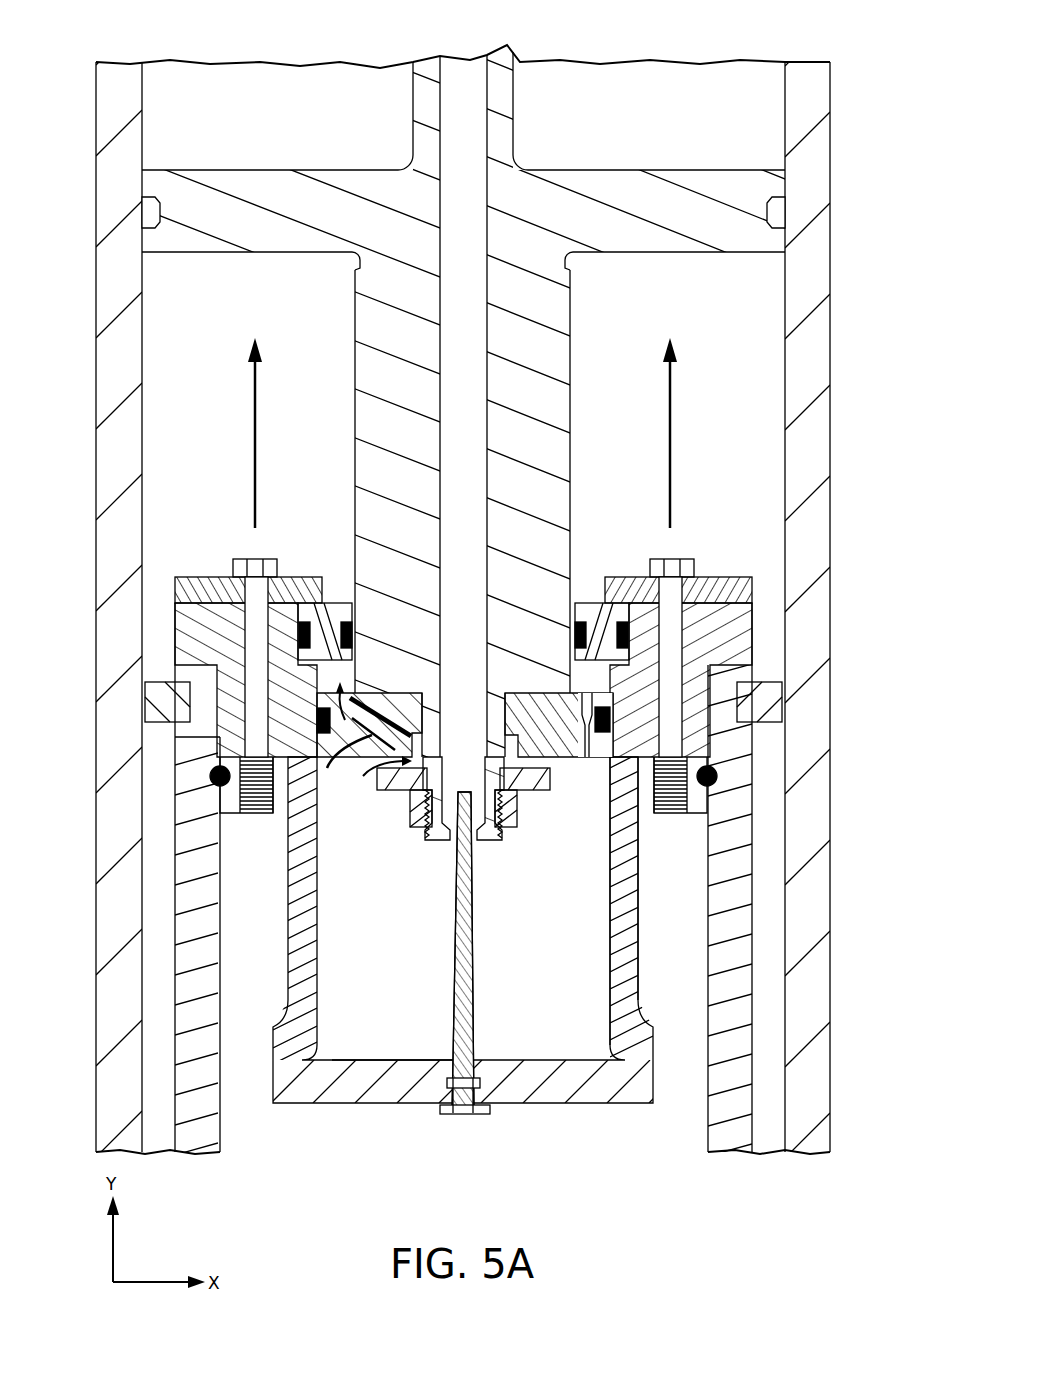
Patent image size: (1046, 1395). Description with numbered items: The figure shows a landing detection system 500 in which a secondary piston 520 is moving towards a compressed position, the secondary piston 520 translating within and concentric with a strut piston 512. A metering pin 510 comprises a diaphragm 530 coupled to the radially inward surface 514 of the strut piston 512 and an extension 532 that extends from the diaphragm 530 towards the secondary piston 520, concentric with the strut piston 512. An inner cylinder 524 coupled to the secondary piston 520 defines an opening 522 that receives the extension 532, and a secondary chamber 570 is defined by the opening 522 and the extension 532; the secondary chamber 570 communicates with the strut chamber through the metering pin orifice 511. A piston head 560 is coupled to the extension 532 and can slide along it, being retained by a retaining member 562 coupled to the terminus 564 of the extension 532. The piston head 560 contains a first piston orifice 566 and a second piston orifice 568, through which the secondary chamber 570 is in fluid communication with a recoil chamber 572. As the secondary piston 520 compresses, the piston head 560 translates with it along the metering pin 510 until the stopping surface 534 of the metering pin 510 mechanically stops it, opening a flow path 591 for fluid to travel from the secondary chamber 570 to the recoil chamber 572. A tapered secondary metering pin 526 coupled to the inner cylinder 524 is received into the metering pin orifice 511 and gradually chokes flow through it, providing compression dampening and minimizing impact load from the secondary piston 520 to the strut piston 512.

The landing detection system 500 is at (700, 95).
The metering pin 510 is at (500, 92).
The metering pin orifice 511 is at (437, 132).
The strut piston 512 is at (798, 287).
The radially inward surface 514 is at (143, 355).
The secondary piston 520 is at (705, 1118).
The opening 522 is at (317, 845).
The inner cylinder 524 is at (620, 965).
The secondary metering pin 526 is at (463, 892).
The diaphragm 530 is at (187, 192).
The extension 532 is at (548, 512).
The stopping surface 534 is at (397, 698).
The piston head 560 is at (560, 752).
The retaining member 562 is at (533, 790).
The terminus 564 is at (498, 832).
The first piston orifice 566 is at (336, 748).
The second piston orifice 568 is at (597, 745).
The secondary chamber 570 is at (420, 994).
The recoil chamber 572 is at (609, 689).
The flow path 591 is at (354, 788).